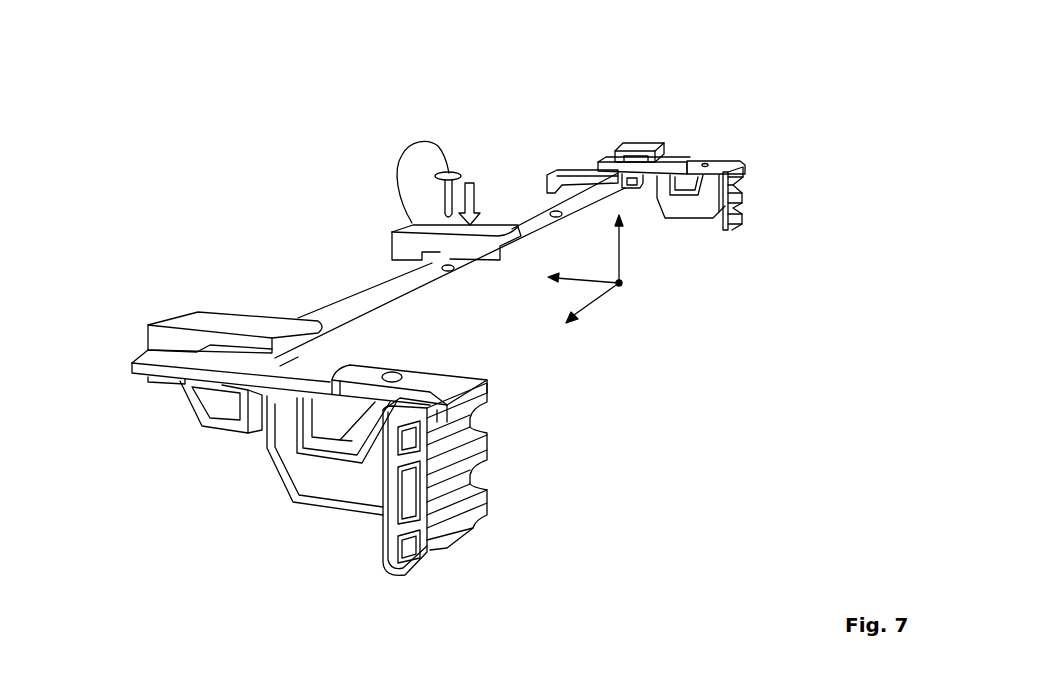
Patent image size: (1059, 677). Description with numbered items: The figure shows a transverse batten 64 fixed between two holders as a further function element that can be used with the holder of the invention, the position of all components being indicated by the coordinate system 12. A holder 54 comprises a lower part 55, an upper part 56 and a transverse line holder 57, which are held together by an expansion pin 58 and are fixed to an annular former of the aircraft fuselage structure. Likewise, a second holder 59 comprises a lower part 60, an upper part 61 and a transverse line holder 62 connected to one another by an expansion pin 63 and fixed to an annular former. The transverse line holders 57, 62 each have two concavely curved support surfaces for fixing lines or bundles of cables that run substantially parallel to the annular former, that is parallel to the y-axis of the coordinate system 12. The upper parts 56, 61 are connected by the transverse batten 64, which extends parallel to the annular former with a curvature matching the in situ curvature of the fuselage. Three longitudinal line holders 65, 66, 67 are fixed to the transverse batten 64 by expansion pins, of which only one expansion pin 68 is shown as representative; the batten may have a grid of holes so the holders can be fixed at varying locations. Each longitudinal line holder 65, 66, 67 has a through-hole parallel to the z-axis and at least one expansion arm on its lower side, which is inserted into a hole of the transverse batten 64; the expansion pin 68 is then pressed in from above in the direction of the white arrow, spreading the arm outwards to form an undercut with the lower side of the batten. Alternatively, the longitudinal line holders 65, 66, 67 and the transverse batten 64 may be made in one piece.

The coordinate system 12 is at (618, 283).
The holder 54 is at (153, 212).
The lower part 55 is at (345, 490).
The upper part 56 is at (148, 368).
The transverse line holder 57 is at (488, 453).
The expansion pin 58 is at (396, 376).
The second holder 59 is at (670, 108).
The lower part 60 is at (703, 210).
The upper part 61 is at (672, 162).
The transverse line holder 62 is at (743, 193).
The expansion pin 63 is at (705, 163).
The transverse batten 64 is at (330, 313).
The longitudinal line holder 65 is at (203, 323).
The longitudinal line holder 66 is at (508, 243).
The longitudinal line holder 67 is at (548, 180).
The expansion pin 68 is at (452, 170).